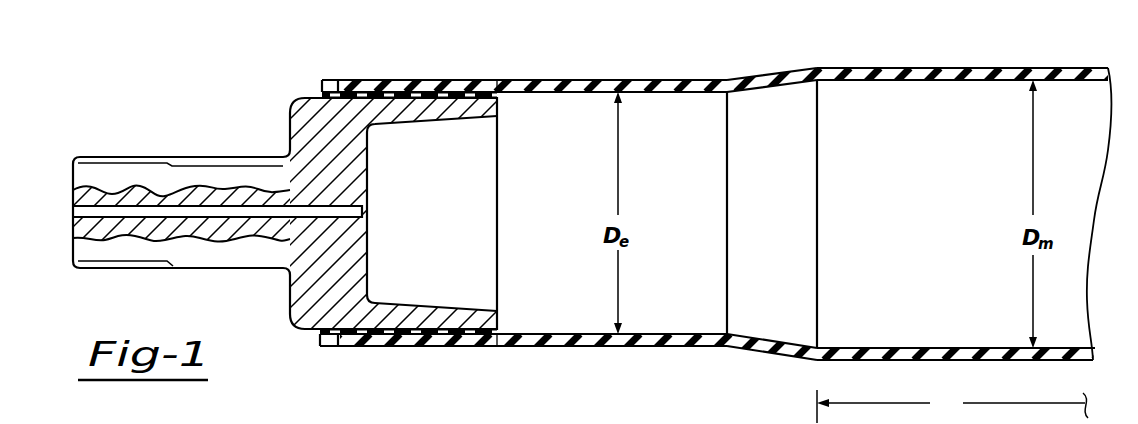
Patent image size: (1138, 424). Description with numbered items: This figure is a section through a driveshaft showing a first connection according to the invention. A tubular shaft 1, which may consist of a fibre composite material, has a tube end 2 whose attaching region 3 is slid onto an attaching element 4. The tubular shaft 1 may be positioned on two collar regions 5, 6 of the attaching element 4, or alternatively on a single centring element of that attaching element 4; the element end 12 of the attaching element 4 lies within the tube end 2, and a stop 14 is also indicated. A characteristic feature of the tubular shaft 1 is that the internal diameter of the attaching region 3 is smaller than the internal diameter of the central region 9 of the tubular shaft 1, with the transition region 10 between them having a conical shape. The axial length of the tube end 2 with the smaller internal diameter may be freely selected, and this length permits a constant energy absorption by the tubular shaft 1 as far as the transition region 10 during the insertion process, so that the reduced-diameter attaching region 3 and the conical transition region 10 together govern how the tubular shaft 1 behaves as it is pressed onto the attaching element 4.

The tubular shaft 1 is at (990, 52).
The tube end 2 is at (657, 88).
The attaching region 3 is at (433, 90).
The attaching element 4 is at (258, 125).
The collar region 5 is at (338, 85).
The collar region 6 is at (500, 87).
The central region of tubular shaft 9 is at (952, 406).
The transition region 10 is at (777, 72).
The element end 12 is at (323, 265).
The stop 14 is at (772, 379).